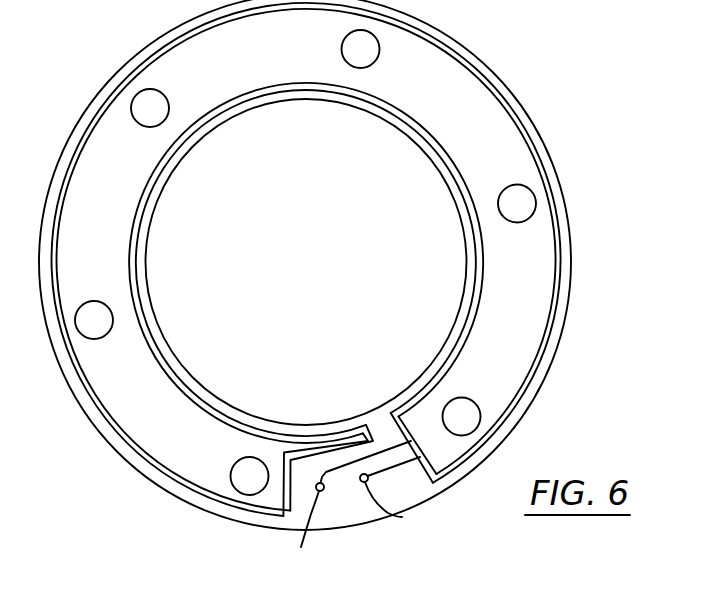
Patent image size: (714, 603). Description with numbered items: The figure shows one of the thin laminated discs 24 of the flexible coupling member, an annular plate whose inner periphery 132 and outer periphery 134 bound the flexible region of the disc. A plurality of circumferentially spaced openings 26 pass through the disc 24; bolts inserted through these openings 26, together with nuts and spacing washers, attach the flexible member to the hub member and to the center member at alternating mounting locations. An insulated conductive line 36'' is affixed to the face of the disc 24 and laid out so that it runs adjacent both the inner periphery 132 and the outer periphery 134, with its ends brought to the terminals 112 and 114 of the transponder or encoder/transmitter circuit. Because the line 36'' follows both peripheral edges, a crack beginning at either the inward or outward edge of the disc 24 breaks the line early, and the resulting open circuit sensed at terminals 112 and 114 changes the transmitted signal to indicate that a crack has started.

The thin disc 24 is at (305, 265).
The openings 26 is at (521, 191).
The conductive line 36'' is at (357, 259).
The inner periphery 132 is at (172, 157).
The outer periphery 134 is at (117, 75).
The terminal 112 is at (402, 517).
The terminal 114 is at (349, 504).